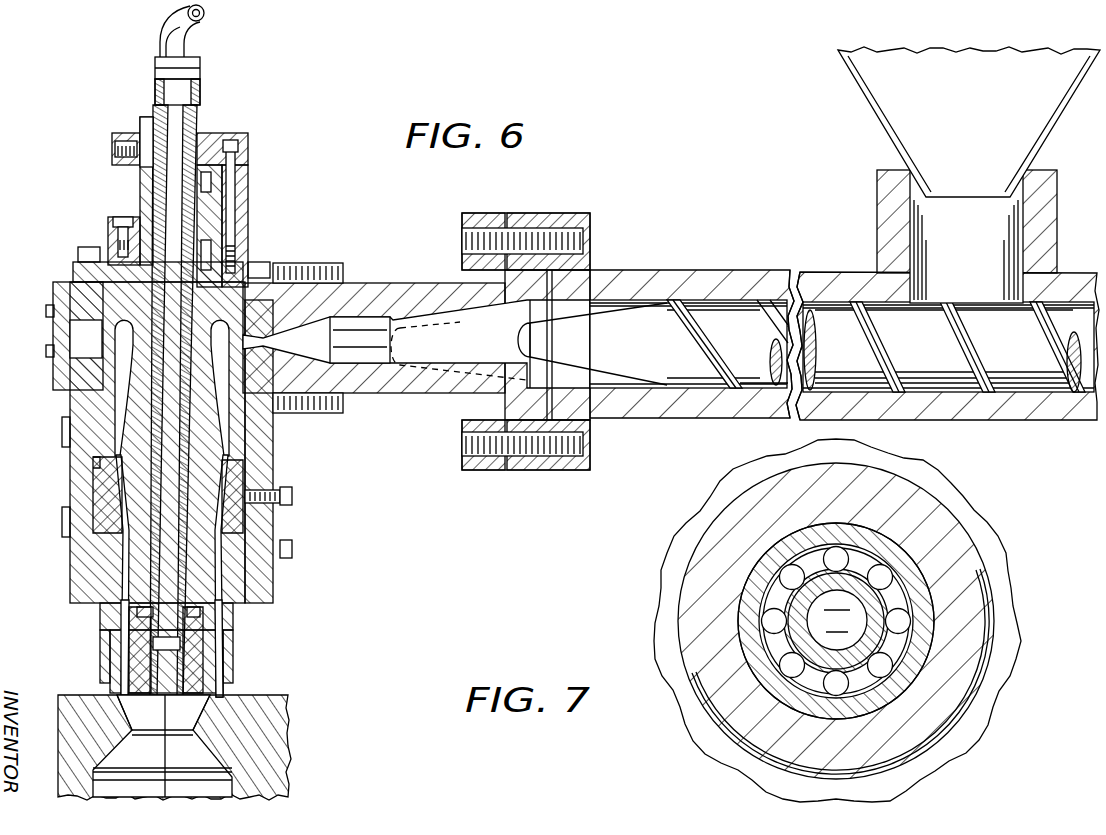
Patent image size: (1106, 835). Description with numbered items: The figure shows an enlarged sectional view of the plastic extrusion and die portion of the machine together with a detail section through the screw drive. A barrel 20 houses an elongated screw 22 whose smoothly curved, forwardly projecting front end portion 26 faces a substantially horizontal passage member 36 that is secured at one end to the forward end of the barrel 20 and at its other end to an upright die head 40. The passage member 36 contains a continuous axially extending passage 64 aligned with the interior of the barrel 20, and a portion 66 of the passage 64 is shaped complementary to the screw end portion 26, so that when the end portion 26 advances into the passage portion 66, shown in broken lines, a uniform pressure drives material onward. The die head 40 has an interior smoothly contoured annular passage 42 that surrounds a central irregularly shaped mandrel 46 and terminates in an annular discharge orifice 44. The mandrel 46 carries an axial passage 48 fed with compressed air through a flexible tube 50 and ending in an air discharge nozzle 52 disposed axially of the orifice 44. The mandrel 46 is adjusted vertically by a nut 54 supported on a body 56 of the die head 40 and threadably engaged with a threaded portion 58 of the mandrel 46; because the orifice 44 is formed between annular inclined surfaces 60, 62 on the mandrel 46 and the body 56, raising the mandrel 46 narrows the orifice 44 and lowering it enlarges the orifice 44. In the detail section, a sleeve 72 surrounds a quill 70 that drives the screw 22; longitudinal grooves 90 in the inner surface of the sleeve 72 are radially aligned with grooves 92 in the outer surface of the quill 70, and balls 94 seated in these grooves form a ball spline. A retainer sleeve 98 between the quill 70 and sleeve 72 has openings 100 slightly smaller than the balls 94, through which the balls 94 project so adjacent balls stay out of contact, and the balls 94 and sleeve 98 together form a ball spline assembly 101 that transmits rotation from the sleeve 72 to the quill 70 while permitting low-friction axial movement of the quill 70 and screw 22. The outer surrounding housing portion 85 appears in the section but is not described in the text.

In FIG. 6, the barrel 20 is at (665, 282).
In FIG. 6, the screw 22 is at (720, 310).
In FIG. 6, the front end portion 26 is at (430, 318).
In FIG. 6, the passage member 36 is at (394, 394).
In FIG. 6, the die head 40 is at (153, 402).
In FIG. 6, the annular passage 42 is at (100, 612).
In FIG. 6, the annular discharge orifice 44 is at (118, 698).
In FIG. 6, the mandrel 46 is at (130, 468).
In FIG. 6, the axial passage 48 is at (183, 122).
In FIG. 6, the flexible tube 50 is at (192, 28).
In FIG. 6, the air discharge nozzle 52 is at (208, 708).
In FIG. 6, the nut 54 is at (138, 213).
In FIG. 6, the body 56 is at (76, 268).
In FIG. 6, the threaded portion 58 is at (216, 214).
In FIG. 6, the annular inclined surface 60 is at (117, 690).
In FIG. 6, the annular inclined surface 62 is at (217, 683).
In FIG. 6, the passage 64 is at (358, 312).
In FIG. 6, the passage portion 66 is at (438, 362).
In FIG. 7, the quill 70 is at (893, 654).
In FIG. 7, the sleeve 72 is at (905, 485).
In FIG. 7, the housing 85 is at (1003, 573).
In FIG. 7, the grooves 90 is at (885, 575).
In FIG. 7, the grooves 92 is at (888, 583).
In FIG. 7, the balls 94 is at (900, 620).
In FIG. 7, the retainer sleeve 98 is at (840, 678).
In FIG. 7, the openings 100 is at (827, 703).
In FIG. 7, the ball spline assembly 101 is at (748, 617).